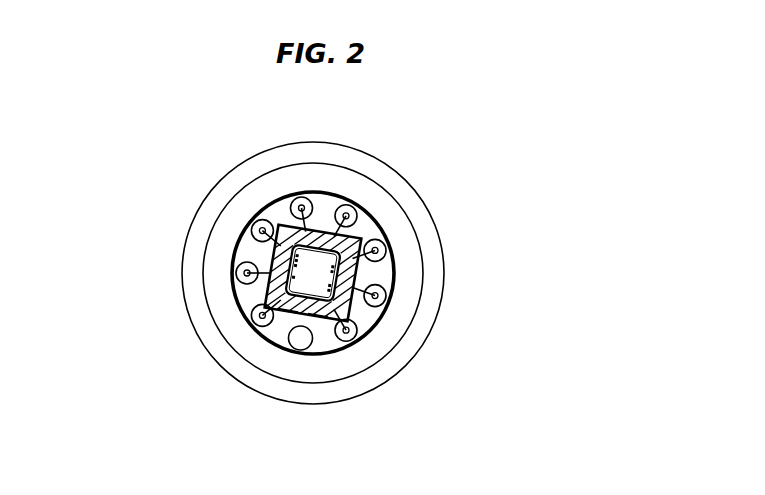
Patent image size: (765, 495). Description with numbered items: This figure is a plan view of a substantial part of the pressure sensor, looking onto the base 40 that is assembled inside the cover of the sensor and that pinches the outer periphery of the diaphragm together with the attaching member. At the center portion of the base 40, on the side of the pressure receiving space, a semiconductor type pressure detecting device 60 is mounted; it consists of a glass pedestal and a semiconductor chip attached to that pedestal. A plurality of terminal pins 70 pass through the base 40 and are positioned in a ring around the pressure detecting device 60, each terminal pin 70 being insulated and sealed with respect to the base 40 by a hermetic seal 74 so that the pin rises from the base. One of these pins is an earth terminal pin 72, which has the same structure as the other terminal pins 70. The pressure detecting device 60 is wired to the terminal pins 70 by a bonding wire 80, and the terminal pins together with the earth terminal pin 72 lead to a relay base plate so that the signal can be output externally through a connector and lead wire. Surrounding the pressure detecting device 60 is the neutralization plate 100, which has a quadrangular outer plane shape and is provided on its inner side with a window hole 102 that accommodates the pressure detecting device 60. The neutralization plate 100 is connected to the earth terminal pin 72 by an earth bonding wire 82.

The base 40 is at (400, 218).
The semiconductor type pressure detecting device 60 is at (318, 286).
The terminal pins 70 is at (302, 208).
The earth terminal pin 72 is at (262, 231).
The hermetic seal 74 is at (352, 343).
The bonding wire 80 is at (334, 270).
The earth bonding wire 82 is at (279, 226).
The neutralization plate 100 is at (288, 311).
The window hole 102 is at (318, 313).